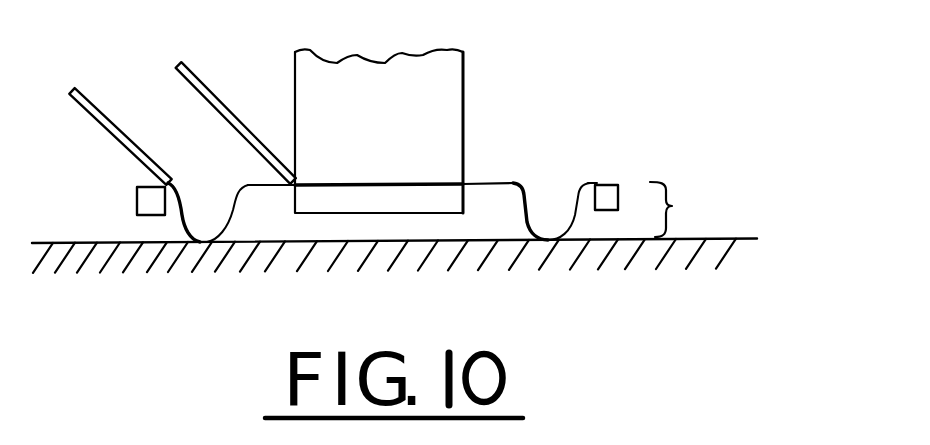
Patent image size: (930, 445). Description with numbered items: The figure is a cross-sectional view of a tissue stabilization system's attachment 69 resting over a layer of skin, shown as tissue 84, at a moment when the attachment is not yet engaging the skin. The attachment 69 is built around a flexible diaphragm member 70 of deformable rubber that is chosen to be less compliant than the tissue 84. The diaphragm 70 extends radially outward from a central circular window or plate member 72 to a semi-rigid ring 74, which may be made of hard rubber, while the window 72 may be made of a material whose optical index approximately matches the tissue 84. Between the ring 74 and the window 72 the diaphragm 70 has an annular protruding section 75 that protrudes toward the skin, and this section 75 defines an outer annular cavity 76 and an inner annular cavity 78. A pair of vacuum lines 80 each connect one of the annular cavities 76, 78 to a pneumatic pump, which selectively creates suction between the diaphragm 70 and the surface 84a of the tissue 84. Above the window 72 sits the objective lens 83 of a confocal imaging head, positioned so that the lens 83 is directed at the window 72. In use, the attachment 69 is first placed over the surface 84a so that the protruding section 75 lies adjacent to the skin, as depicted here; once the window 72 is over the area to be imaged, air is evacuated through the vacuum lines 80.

The attachment 69 is at (680, 209).
The flexible diaphragm member 70 is at (493, 183).
The central circular window or plate member 72 is at (357, 200).
The semi-rigid ring 74 is at (137, 202).
The annular protruding section 75 is at (208, 242).
The outer annular cavity 76 is at (172, 208).
The inner annular cavity 78 is at (262, 220).
The vacuum lines 80 is at (189, 77).
The objective lens 83 is at (463, 87).
The tissue 84 is at (713, 285).
The surface of tissue 84a is at (297, 242).